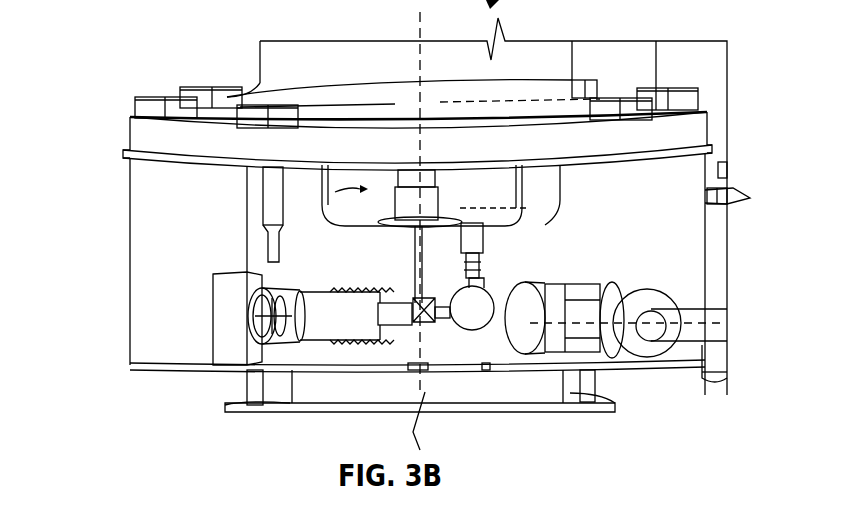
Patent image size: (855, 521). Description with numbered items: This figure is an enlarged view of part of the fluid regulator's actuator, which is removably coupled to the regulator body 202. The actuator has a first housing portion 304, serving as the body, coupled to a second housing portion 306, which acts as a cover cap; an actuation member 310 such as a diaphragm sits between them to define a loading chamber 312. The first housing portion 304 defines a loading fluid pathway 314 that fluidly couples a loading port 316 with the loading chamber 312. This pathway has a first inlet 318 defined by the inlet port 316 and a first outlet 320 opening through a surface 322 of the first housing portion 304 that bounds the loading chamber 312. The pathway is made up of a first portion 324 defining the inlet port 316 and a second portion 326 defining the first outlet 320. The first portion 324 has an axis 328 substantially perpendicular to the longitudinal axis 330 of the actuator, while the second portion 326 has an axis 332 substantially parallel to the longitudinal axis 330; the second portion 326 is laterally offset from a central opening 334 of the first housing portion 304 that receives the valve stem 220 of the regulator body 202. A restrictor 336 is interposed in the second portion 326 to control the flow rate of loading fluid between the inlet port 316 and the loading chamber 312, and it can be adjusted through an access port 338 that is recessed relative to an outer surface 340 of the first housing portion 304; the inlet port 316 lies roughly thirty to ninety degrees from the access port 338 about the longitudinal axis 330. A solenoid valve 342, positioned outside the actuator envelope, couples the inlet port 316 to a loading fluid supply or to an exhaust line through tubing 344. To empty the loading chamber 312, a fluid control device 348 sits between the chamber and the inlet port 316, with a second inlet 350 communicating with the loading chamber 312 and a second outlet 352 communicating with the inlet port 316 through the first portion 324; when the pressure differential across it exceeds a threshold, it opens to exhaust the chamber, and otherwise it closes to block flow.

The regulator body 202 is at (263, 383).
The valve stem 220 is at (408, 168).
The first housing portion 304 is at (130, 205).
The second housing portion 306 is at (298, 44).
The actuation member 310 is at (123, 152).
The loading chamber 312 is at (320, 168).
The loading fluid pathway 314 is at (496, 345).
The loading port 316 is at (585, 284).
The first inlet 318 is at (545, 283).
The first outlet 320 is at (440, 187).
The surface 322 is at (352, 213).
The first portion 324 is at (520, 282).
The second portion 326 is at (413, 248).
The axis 328 is at (663, 352).
The longitudinal axis 330 is at (418, 28).
The axis 332 is at (414, 452).
The central opening 334 is at (390, 228).
The restrictor 336 is at (357, 320).
The access port 338 is at (243, 318).
The outer surface 340 is at (187, 225).
The solenoid valve 342 is at (692, 41).
The tubing 344 is at (700, 352).
The fluid control device 348 is at (540, 230).
The second inlet 350 is at (478, 222).
The second outlet 352 is at (486, 284).